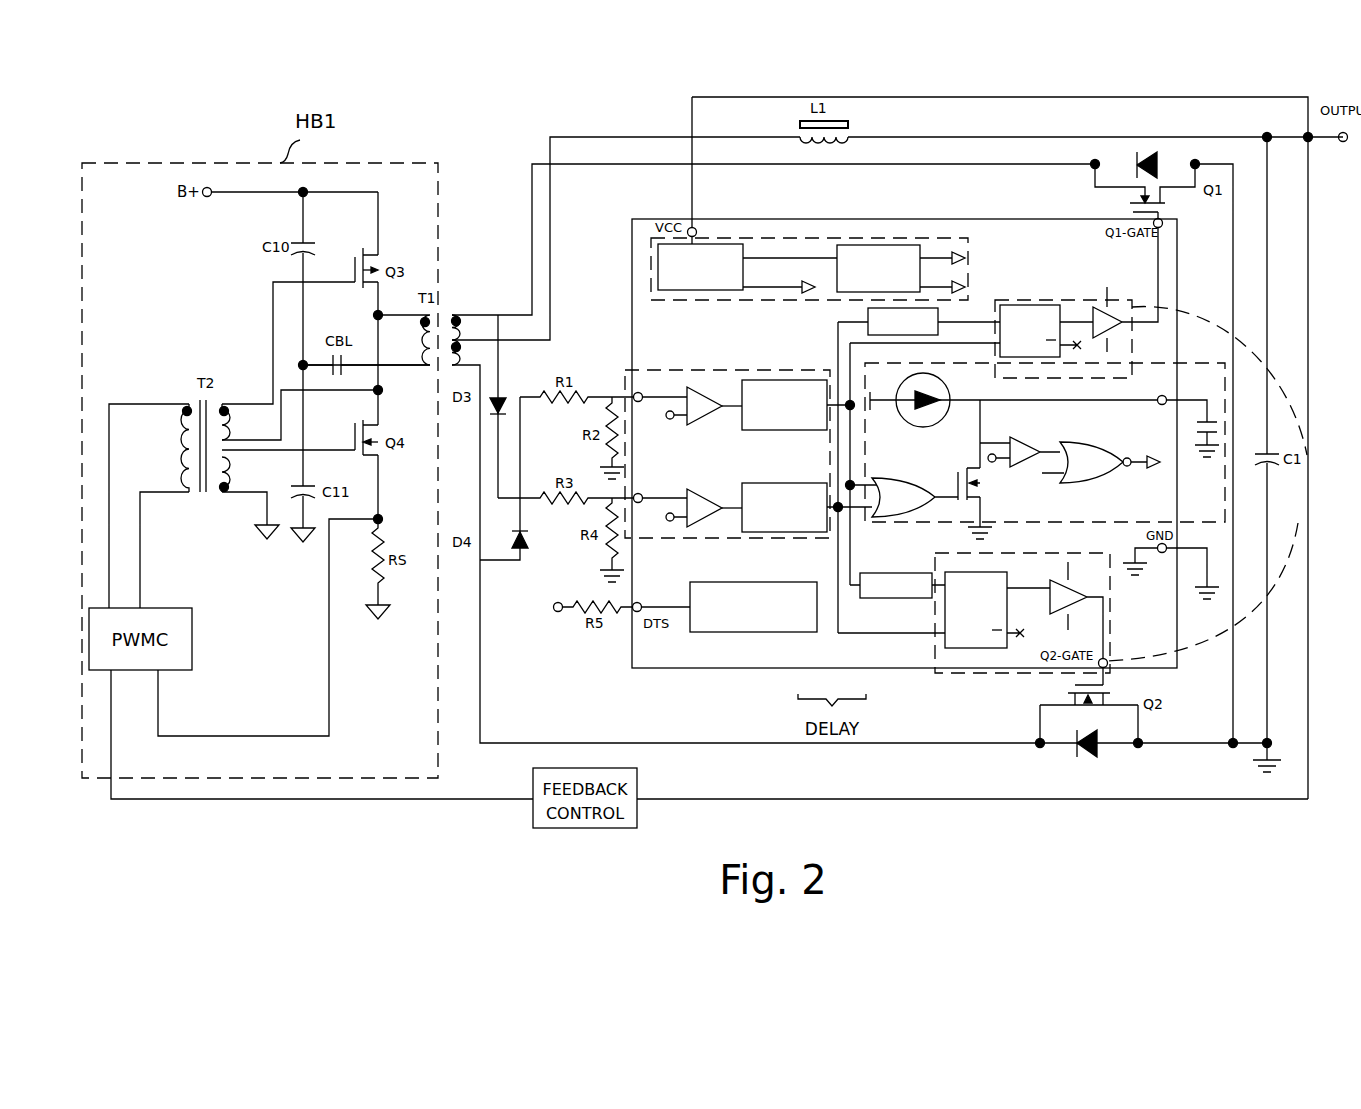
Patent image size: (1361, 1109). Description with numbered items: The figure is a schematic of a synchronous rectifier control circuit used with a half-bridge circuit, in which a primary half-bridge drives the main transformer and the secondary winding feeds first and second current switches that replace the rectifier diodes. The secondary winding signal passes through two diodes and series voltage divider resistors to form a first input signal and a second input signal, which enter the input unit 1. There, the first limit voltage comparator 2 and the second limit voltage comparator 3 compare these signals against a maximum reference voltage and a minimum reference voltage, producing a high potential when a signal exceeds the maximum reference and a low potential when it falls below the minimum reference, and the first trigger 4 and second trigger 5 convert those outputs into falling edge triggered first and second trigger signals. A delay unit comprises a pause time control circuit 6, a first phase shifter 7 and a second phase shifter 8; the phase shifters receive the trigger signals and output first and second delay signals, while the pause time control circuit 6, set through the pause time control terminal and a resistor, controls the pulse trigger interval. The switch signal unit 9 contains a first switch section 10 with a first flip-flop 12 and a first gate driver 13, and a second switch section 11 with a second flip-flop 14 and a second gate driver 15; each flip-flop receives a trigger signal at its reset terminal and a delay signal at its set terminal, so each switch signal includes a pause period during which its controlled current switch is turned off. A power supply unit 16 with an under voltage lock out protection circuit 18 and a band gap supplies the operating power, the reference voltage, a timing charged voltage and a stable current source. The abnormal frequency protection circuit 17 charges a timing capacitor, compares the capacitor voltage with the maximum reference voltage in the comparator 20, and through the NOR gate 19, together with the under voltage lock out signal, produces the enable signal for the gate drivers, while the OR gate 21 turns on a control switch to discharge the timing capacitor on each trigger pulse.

The input unit 1 is at (727, 522).
The first limit voltage comparator 2 is at (702, 392).
The second limit voltage comparator 3 is at (702, 493).
The first trigger 4 is at (783, 380).
The second trigger 5 is at (783, 483).
The pause time control circuit 6 is at (787, 632).
The first phase shifter 7 is at (888, 598).
The second phase shifter 8 is at (867, 336).
The switch signal unit 9 is at (1229, 484).
The first switch section 10 is at (1307, 455).
The second switch section 11 is at (1298, 523).
The first flip-flop 12 is at (1054, 300).
The first gate driver 13 is at (1115, 323).
The second flip-flop 14 is at (976, 648).
The second gate driver 15 is at (1078, 602).
The power supply unit 16 is at (829, 239).
The abnormal frequency protection circuit 17 is at (1045, 433).
The under voltage lock out protection circuit 18 is at (720, 243).
The NOR gate 19 is at (1093, 442).
The comparator 20 is at (1024, 438).
The OR gate 21 is at (896, 478).